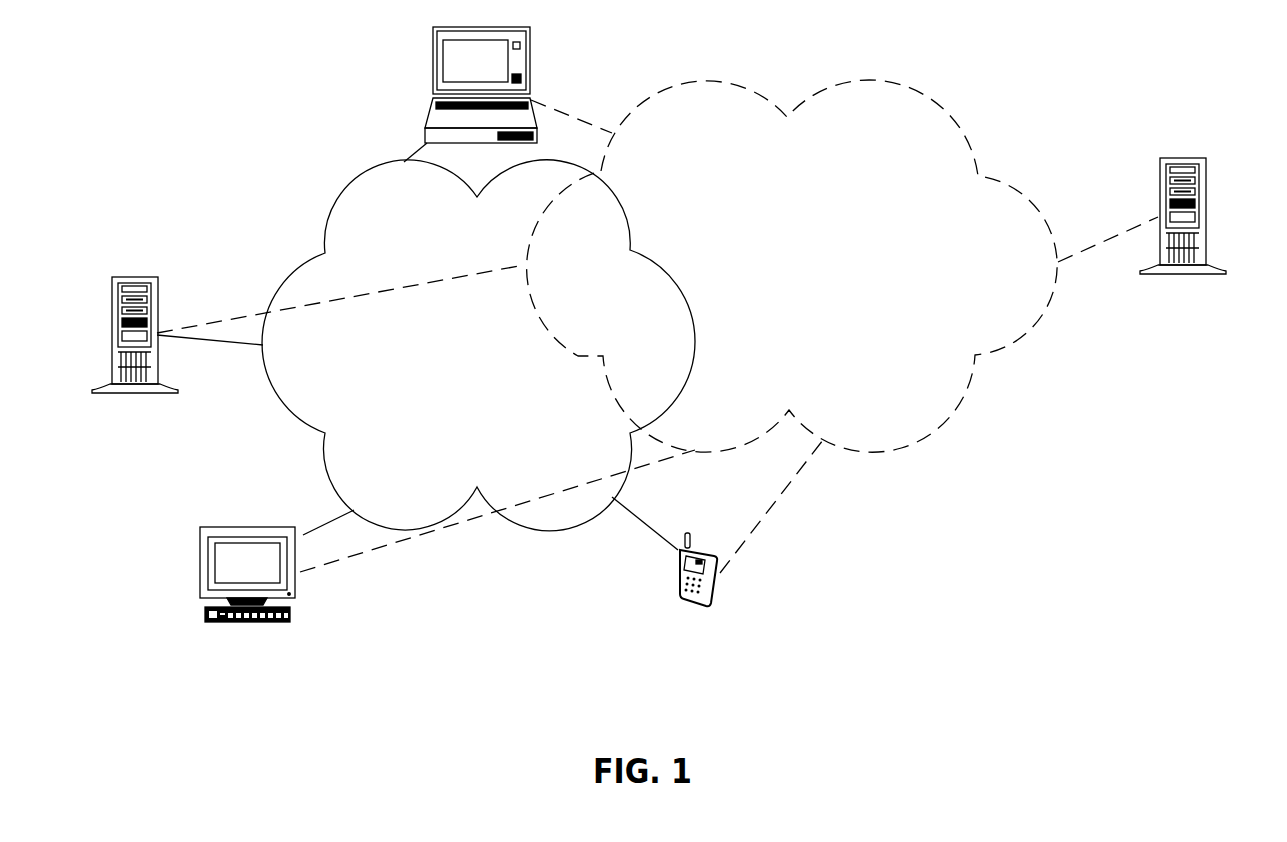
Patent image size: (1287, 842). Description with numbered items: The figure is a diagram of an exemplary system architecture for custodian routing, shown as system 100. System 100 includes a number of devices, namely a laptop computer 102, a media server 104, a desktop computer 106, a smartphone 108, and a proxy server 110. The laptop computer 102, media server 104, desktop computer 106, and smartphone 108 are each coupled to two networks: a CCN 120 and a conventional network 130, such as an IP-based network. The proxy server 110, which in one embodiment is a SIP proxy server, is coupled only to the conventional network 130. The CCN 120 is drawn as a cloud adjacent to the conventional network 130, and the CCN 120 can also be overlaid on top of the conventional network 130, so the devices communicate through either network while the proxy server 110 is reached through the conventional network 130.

The system 100 is at (660, 705).
The laptop computer 102 is at (432, 72).
The media server 104 is at (113, 280).
The desktop computer 106 is at (245, 623).
The smartphone 108 is at (678, 594).
The proxy server 110 is at (1207, 217).
The CCN 120 is at (478, 345).
The conventional network 130 is at (792, 266).